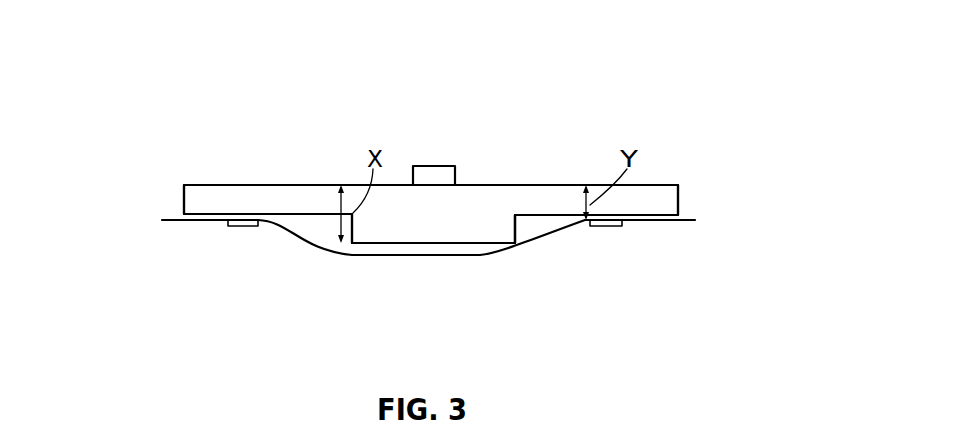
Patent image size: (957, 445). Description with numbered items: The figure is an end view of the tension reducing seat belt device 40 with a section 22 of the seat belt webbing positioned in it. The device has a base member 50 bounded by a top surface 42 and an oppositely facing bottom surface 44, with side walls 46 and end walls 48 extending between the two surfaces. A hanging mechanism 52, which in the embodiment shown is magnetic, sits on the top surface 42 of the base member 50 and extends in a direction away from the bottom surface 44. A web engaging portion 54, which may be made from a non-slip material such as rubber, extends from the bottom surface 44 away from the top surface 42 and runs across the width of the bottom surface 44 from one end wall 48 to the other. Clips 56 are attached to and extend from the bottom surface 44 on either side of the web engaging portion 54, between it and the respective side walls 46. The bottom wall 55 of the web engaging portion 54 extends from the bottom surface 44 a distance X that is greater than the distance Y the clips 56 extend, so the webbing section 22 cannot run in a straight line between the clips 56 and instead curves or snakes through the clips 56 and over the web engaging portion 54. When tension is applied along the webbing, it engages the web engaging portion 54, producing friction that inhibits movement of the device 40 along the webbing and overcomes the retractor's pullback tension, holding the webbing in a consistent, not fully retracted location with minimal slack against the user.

The section of the seat belt webbing 22 is at (182, 222).
The tension reducing seat belt device 40 is at (428, 192).
The top surface 42 is at (572, 185).
The bottom surface 44 is at (547, 213).
The side walls 46 is at (184, 197).
The end walls 48 is at (263, 190).
The base member 50 is at (656, 180).
The hanging mechanism 52 is at (440, 168).
The web engaging portion 54 is at (420, 226).
The bottom wall 55 is at (477, 243).
The clips 56 is at (242, 234).